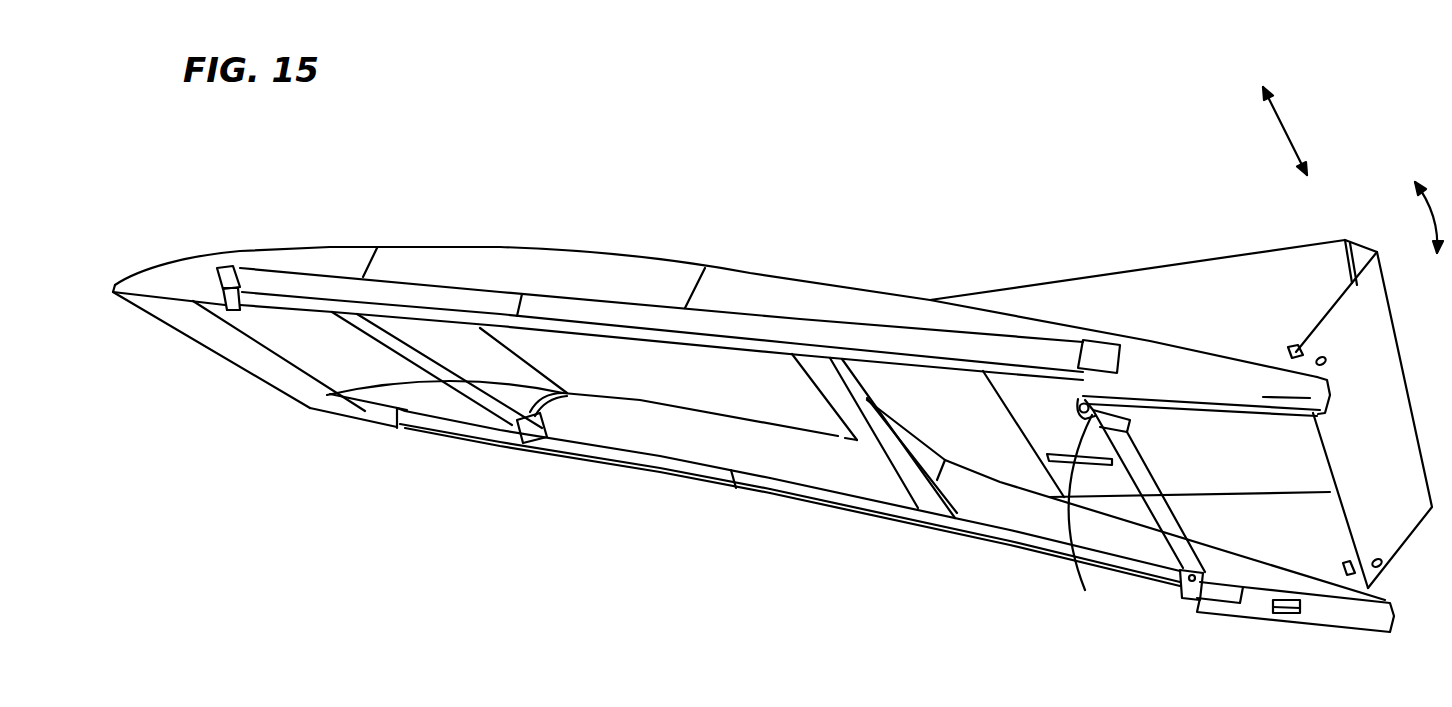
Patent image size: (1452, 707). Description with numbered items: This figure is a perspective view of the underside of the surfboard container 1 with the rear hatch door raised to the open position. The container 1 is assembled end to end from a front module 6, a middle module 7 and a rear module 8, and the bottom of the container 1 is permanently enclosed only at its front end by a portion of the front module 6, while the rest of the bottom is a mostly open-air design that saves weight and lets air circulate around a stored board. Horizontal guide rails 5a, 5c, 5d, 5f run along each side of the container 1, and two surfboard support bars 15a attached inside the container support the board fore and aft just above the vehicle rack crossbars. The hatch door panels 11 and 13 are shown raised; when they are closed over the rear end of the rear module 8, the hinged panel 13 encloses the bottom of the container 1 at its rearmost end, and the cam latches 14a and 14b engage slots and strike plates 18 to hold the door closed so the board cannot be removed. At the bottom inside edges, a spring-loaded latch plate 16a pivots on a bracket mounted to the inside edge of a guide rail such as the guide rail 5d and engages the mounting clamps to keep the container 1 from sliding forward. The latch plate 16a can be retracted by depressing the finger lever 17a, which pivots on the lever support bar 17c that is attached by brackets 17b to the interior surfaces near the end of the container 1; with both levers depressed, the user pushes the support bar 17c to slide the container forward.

The surfboard container 1 is at (278, 200).
The front module 6 is at (197, 262).
The horizontal guide rail 5a is at (267, 280).
The middle module 7 is at (500, 258).
The horizontal guide rail 5c is at (767, 320).
The rear module 8 is at (875, 293).
The rear hatch door panel 11 is at (1137, 275).
The hinged hatch door panel 13 is at (1362, 248).
The cam latch 14a is at (1300, 350).
The cam latch 14b is at (1350, 563).
The surfboard support bar 15a is at (473, 412).
The latch plate 16a is at (550, 440).
The horizontal guide rail 5d is at (692, 476).
The horizontal guide rail 5f is at (808, 493).
The lever support bar 17c is at (1177, 517).
The finger lever 17a is at (1180, 597).
The bracket 17b is at (1243, 585).
The strike plate 18 is at (1300, 614).